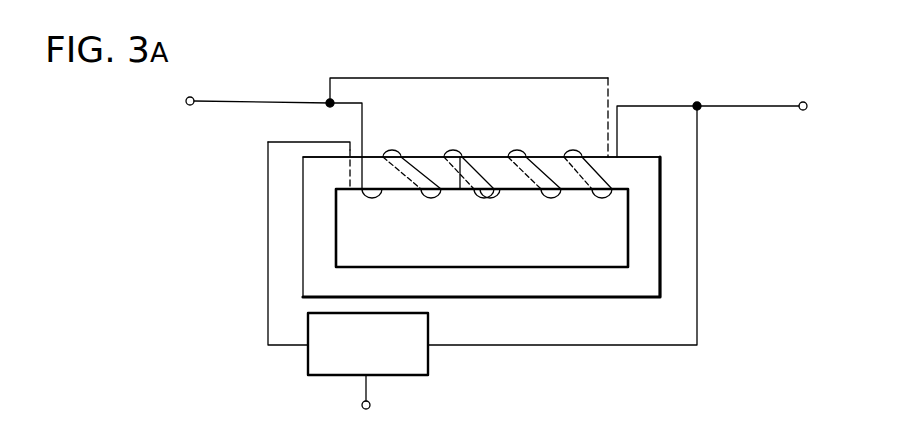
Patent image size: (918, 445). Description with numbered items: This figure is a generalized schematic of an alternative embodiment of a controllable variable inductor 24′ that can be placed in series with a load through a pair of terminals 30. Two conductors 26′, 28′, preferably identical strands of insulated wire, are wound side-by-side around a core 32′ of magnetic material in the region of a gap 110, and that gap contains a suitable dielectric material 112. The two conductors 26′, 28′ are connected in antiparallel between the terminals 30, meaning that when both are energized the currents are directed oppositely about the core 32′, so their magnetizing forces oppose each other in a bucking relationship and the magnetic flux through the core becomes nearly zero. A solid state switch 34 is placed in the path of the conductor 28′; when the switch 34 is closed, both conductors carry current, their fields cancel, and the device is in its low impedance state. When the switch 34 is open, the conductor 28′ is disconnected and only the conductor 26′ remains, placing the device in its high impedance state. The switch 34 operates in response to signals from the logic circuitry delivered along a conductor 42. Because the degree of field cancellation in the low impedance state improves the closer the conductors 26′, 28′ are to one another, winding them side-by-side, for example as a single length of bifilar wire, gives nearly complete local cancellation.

The pair of terminals 30 is at (191, 106).
The variable inductor 24′ is at (612, 75).
The conductor 28′ is at (448, 156).
The conductor 26′ is at (485, 160).
The gap 110 is at (489, 168).
The dielectric material 112 is at (480, 195).
The core 32′ is at (645, 230).
The solid state switch 34 is at (308, 358).
The conductors 42 is at (368, 390).